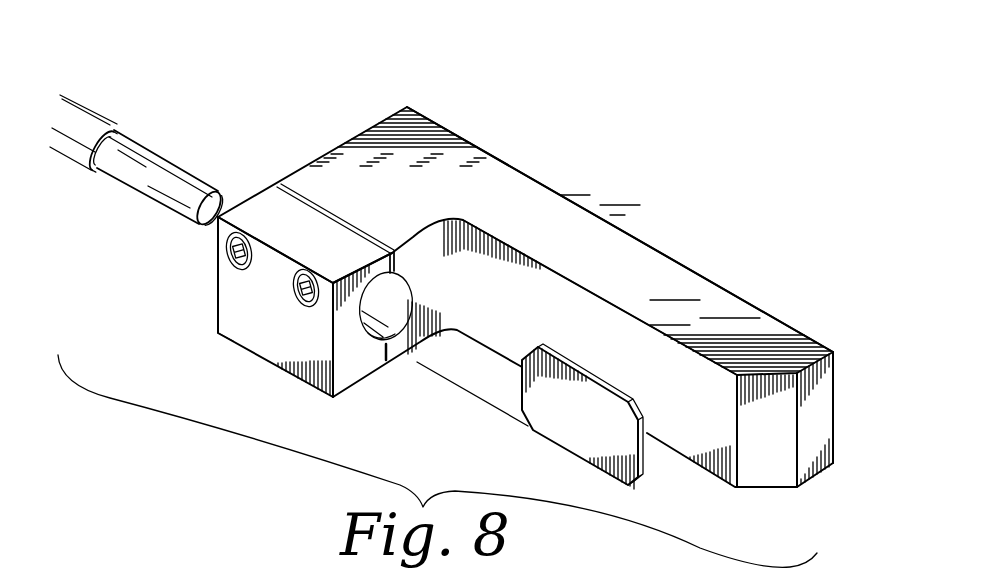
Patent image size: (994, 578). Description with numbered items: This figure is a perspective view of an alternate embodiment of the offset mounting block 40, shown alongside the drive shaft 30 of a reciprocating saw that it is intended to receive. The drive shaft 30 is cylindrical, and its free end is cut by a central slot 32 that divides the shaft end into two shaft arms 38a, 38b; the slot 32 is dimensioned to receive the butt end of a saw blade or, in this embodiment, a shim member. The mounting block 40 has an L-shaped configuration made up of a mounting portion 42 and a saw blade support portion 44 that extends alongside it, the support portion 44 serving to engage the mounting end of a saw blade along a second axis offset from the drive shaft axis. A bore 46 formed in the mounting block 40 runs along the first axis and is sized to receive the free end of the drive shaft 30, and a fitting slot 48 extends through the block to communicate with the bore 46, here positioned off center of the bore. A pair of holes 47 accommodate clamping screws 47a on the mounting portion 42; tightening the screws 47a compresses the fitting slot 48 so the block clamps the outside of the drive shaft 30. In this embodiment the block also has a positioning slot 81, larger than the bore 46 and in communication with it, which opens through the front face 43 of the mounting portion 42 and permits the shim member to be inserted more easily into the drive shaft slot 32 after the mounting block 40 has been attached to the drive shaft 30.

The drive shaft 30 is at (103, 117).
The central slot 32 is at (170, 163).
The shaft arm 38a is at (220, 212).
The shaft arm 38b is at (190, 222).
The mounting block 40 is at (415, 153).
The mounting portion 42 is at (265, 348).
The front face 43 is at (343, 343).
The saw blade support portion 44 is at (660, 260).
The bore 46 is at (402, 300).
The holes 47 is at (222, 333).
The clamping screws 47a is at (227, 243).
The fitting slot 48 is at (313, 213).
The positioning slot 81 is at (390, 272).